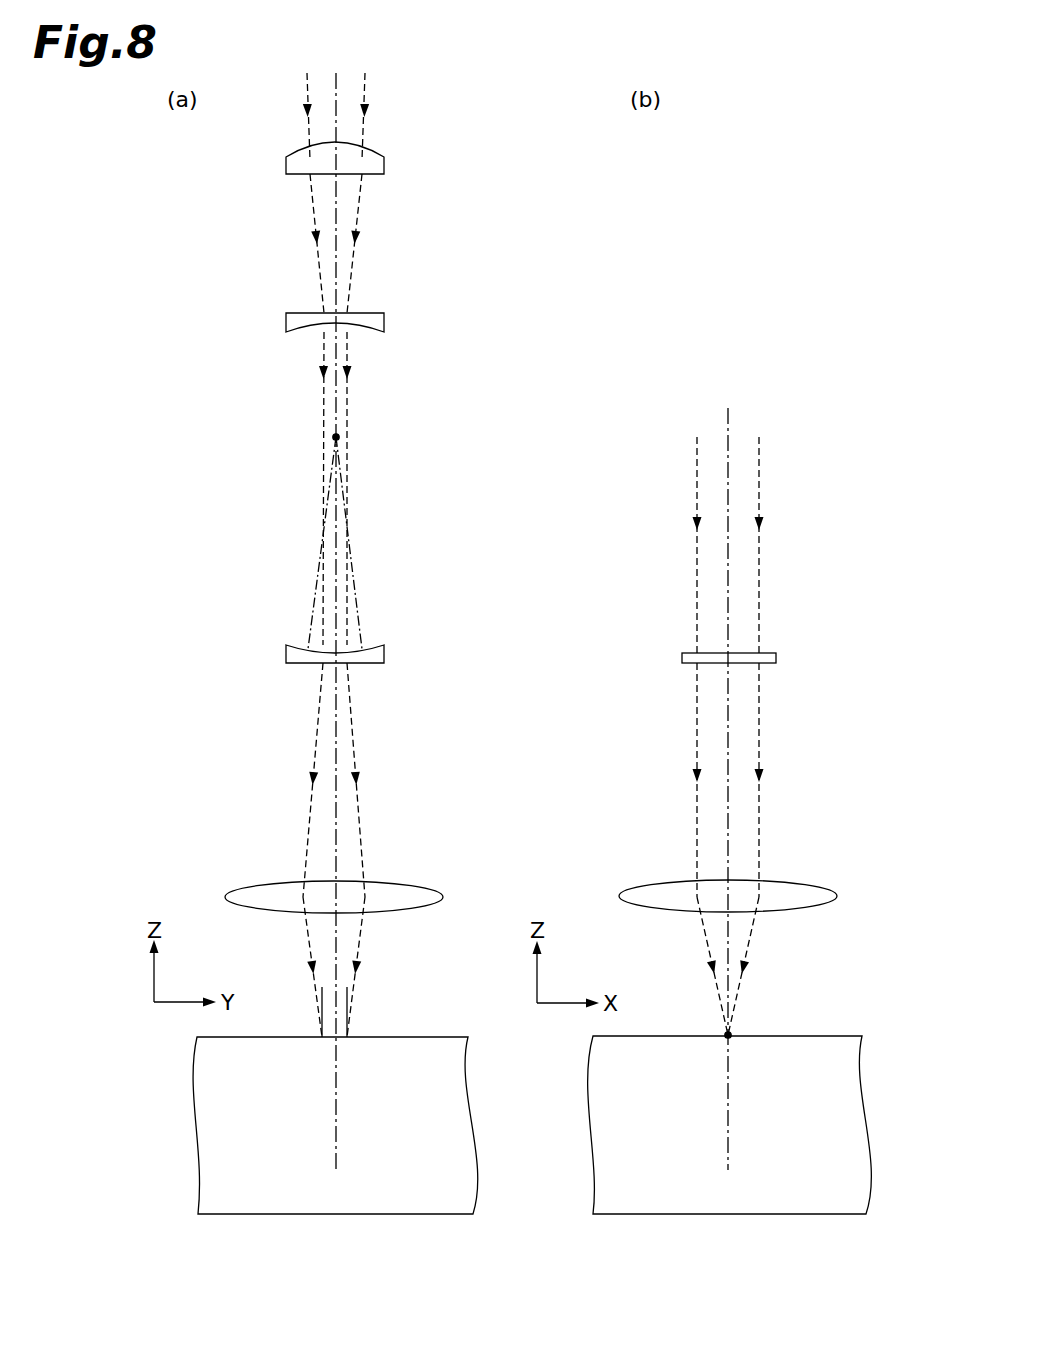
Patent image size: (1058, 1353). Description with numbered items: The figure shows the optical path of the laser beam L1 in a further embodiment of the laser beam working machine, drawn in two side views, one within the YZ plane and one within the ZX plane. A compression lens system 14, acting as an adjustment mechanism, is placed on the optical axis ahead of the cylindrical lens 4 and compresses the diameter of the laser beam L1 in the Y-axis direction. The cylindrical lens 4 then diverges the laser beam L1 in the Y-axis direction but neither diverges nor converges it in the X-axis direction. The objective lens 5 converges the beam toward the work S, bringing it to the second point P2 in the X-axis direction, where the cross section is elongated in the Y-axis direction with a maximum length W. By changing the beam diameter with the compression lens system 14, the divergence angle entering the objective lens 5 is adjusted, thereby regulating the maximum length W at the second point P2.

The compression lens system 14 is at (397, 145).
The cylindrical lens 4 is at (285, 652).
The objective lens 5 is at (412, 884).
The laser beam L1 is at (305, 88).
The work S is at (441, 1037).
The maximum length in the Y-axis direction W is at (297, 993).
The second point P2 is at (733, 1033).